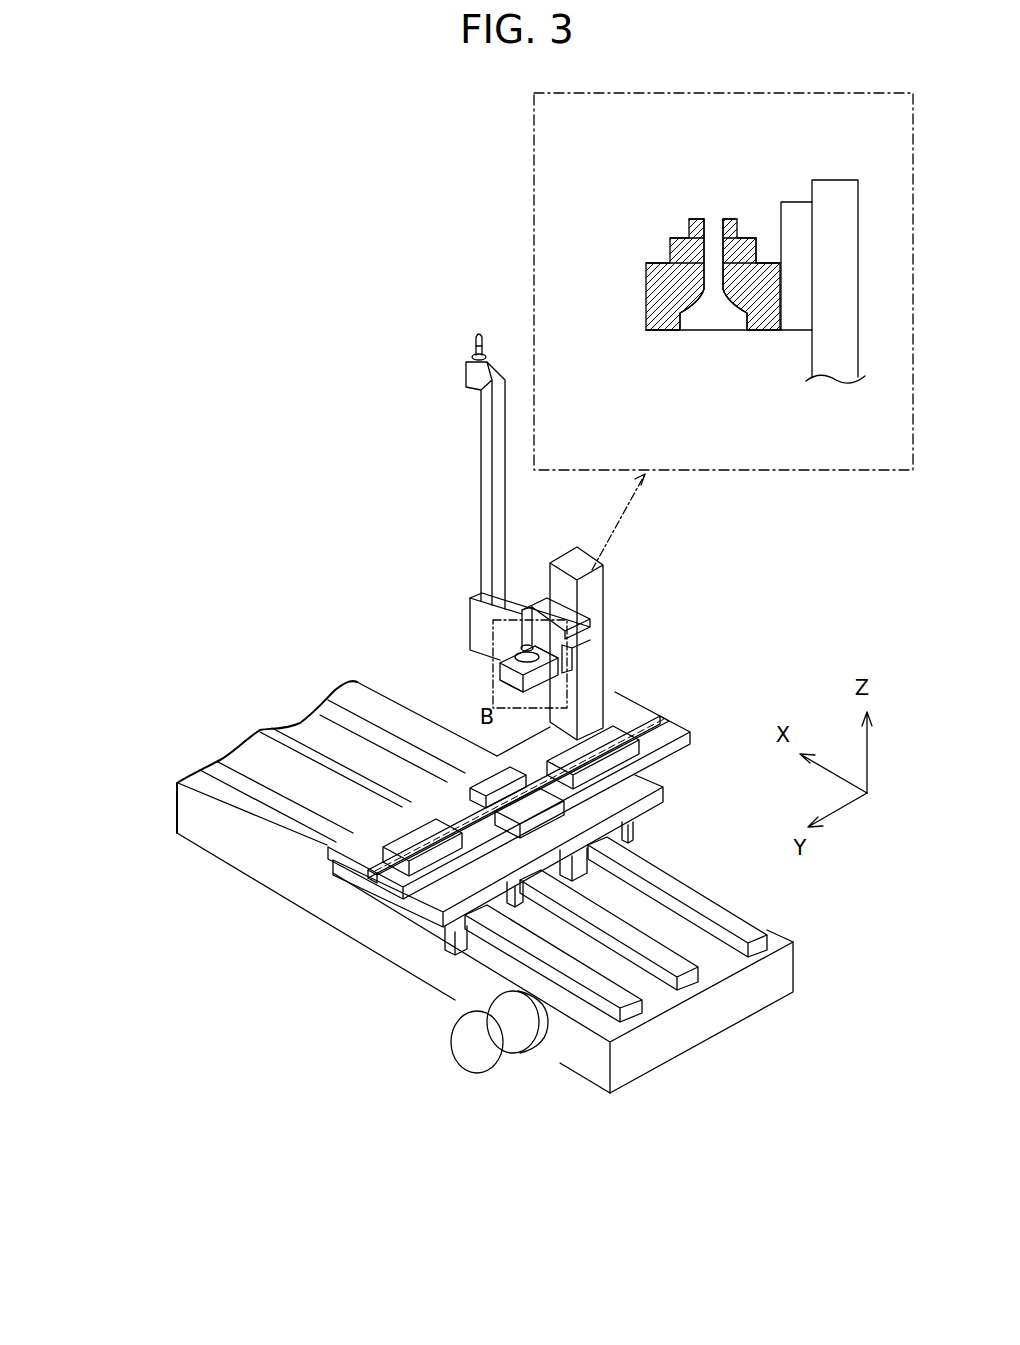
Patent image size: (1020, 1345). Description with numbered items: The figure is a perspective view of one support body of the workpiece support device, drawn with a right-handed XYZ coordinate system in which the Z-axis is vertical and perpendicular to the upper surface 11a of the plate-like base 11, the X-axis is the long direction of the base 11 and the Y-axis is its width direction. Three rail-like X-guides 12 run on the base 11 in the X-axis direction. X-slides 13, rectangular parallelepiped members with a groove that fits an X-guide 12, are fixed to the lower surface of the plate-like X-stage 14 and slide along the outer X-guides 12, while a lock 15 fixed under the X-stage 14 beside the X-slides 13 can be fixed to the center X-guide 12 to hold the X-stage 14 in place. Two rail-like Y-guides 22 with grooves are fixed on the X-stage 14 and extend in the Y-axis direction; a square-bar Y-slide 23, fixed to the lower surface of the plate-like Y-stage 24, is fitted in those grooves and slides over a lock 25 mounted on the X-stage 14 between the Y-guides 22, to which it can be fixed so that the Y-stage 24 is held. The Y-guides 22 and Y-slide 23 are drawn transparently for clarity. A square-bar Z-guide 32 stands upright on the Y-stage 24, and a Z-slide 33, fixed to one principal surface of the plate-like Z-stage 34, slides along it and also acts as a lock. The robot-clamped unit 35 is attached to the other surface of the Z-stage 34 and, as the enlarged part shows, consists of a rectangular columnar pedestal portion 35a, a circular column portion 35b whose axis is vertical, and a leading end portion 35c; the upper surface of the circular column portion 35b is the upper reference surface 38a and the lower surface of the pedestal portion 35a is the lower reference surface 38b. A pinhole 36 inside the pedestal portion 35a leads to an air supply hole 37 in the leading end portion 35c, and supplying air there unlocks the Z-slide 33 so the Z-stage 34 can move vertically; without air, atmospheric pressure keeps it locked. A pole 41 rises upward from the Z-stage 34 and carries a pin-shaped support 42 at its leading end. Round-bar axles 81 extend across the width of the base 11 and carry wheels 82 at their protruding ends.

The base 11 is at (690, 1037).
The upper surface 11a is at (675, 898).
The X-guide 12 is at (756, 932).
The X-slide 13 is at (640, 826).
The X-stage 14 is at (435, 897).
The lock 15 is at (553, 880).
The Y-guide 22 is at (640, 781).
The Y-slide 23 is at (641, 714).
The Y-stage 24 is at (355, 832).
The lock 25 is at (510, 887).
The Z-guide 32 is at (602, 583).
The Z-slide 33 is at (587, 620).
The Z-stage 34 is at (528, 607).
The robot-clamped unit 35 is at (618, 442).
The pedestal portion 35a is at (650, 300).
The circular column portion 35b is at (670, 256).
The leading end portion 35c is at (689, 226).
The pinhole 36 is at (715, 316).
The air supply hole 37 is at (713, 232).
The upper reference surface 38a is at (750, 238).
The lower reference surface 38b is at (660, 330).
The pole 41 is at (507, 505).
The support 42 is at (484, 350).
The axle 81 is at (512, 1040).
The wheel 82 is at (472, 1052).